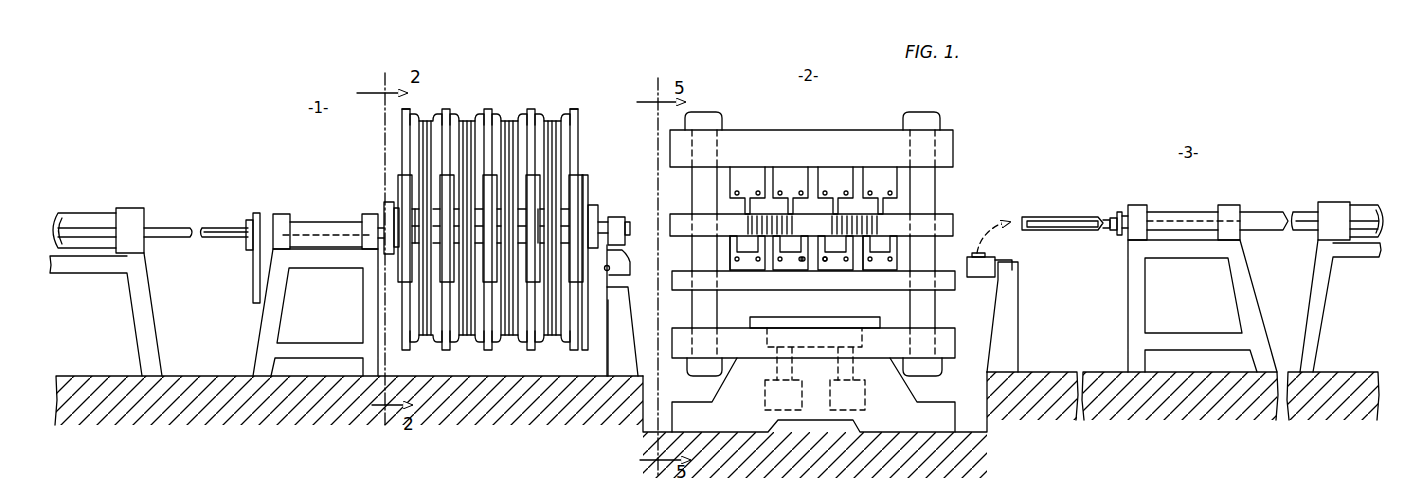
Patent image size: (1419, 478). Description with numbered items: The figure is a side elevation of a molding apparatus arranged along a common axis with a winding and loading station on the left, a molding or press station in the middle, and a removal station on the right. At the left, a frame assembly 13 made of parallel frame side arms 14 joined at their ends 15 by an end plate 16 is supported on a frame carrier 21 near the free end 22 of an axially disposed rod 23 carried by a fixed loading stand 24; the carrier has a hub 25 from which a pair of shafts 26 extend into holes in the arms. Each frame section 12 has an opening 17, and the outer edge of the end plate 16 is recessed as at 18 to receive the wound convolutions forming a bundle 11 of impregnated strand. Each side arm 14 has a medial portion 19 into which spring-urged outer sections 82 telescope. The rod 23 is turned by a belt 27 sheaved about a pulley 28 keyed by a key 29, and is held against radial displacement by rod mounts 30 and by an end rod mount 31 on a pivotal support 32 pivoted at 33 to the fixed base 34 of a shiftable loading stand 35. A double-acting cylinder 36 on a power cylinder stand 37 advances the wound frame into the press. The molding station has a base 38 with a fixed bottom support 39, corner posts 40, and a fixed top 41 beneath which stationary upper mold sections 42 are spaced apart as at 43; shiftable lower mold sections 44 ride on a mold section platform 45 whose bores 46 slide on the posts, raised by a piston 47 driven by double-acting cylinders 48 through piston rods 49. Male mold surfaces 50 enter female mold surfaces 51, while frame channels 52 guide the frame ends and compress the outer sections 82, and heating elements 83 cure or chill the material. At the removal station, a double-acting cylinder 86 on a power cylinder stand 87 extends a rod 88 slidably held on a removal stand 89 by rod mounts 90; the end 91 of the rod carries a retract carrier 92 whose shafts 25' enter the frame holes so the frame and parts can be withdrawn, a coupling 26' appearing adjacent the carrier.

The bundle 11 is at (510, 338).
The frame section 12 is at (485, 104).
The frame assembly 13 is at (473, 348).
The frame side arms 14 is at (584, 178).
The ends 15 is at (579, 110).
The end plate 16 is at (541, 118).
The opening 17 is at (440, 312).
The recess 18 is at (455, 117).
The medial portion 19 is at (579, 194).
The frame carrier 21 is at (381, 202).
The free end 22 is at (649, 257).
The rod 23 is at (310, 224).
The loading stand 24 is at (268, 337).
The hub 25 is at (362, 219).
The shafts 26 is at (514, 184).
The belt 27 is at (252, 287).
The pulley 28 is at (246, 244).
The key 29 is at (221, 226).
The rod mounts 30 is at (370, 252).
The rod mount 31 is at (615, 220).
The pivotal support 32 is at (624, 262).
The pivot 33 is at (605, 270).
The fixed base 34 is at (640, 347).
The shiftable loading stand 35 is at (639, 315).
The double-acting cylinder 36 is at (89, 213).
The power cylinder stand 37 is at (146, 322).
The base 38 is at (898, 418).
The bottom support 39 is at (947, 345).
The corner posts 40 is at (926, 178).
The fixed top 41 is at (858, 129).
The upper mold sections 42 is at (793, 180).
The space 43 is at (857, 180).
The lower mold sections 44 is at (874, 264).
The mold section platform 45 is at (760, 280).
The bores 46 is at (697, 286).
The piston 47 is at (814, 296).
The double-acting cylinders 48 is at (783, 396).
The piston rod 49 is at (776, 368).
The male mold surface 50 is at (889, 208).
The female mold surfaces 51 is at (880, 252).
The frame channels 52 is at (953, 223).
The outer sections 82 is at (580, 342).
The heating elements 83 is at (890, 191).
The double-acting cylinder 86 is at (1365, 210).
The power cylinder stand 87 is at (1321, 312).
The rod 88 is at (1250, 218).
The removal stand 89 is at (1243, 301).
The rod mounts 90 is at (1229, 207).
The end 91 is at (1023, 220).
The retract carrier 92 is at (1059, 210).
The shafts 25' is at (1126, 201).
The coupling 26' is at (1099, 239).